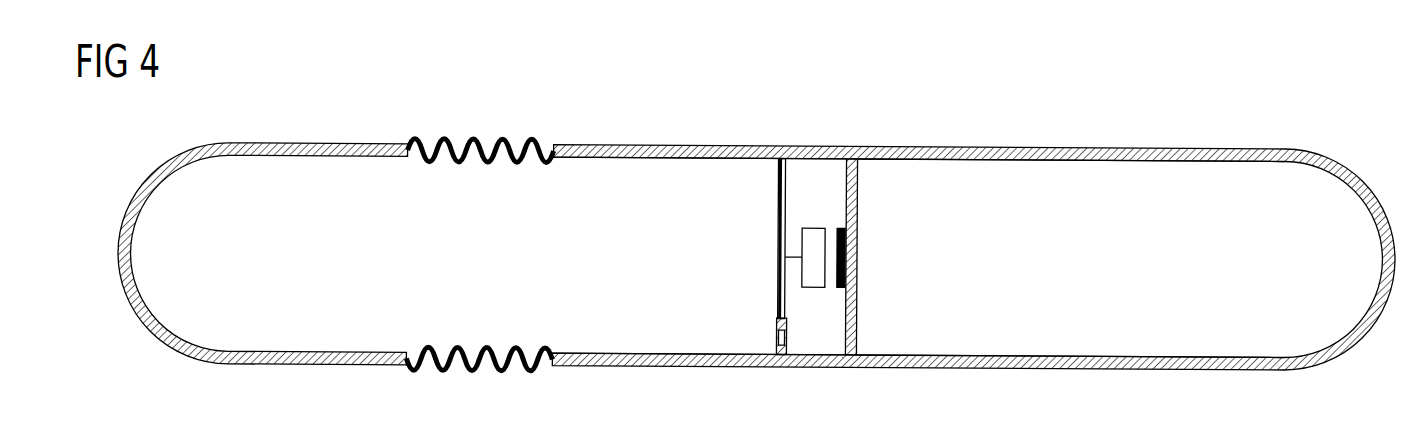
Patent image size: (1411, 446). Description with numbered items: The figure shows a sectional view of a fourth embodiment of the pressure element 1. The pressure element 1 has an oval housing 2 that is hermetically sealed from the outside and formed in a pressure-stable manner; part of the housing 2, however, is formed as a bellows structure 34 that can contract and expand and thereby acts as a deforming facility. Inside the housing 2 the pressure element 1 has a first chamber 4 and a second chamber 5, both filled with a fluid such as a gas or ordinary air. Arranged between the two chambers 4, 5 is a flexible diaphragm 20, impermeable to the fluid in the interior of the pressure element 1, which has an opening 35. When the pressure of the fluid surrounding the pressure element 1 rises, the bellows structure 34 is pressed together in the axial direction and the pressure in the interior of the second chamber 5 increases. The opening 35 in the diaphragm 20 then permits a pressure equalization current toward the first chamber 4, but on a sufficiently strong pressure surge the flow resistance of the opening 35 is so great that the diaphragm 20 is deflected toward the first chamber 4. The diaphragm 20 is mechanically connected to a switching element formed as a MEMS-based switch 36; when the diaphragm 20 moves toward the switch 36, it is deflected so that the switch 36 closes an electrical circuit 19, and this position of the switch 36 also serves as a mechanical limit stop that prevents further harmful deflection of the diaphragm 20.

The pressure element 1 is at (1138, 114).
The housing 2 is at (320, 143).
The bellows structure 34 is at (460, 145).
The second chamber 5 is at (590, 175).
The first chamber 4 is at (995, 178).
The diaphragm 20 is at (778, 213).
The opening 35 is at (767, 338).
The MEMS-based switch 36 is at (815, 237).
The electrical circuit 19 is at (858, 250).